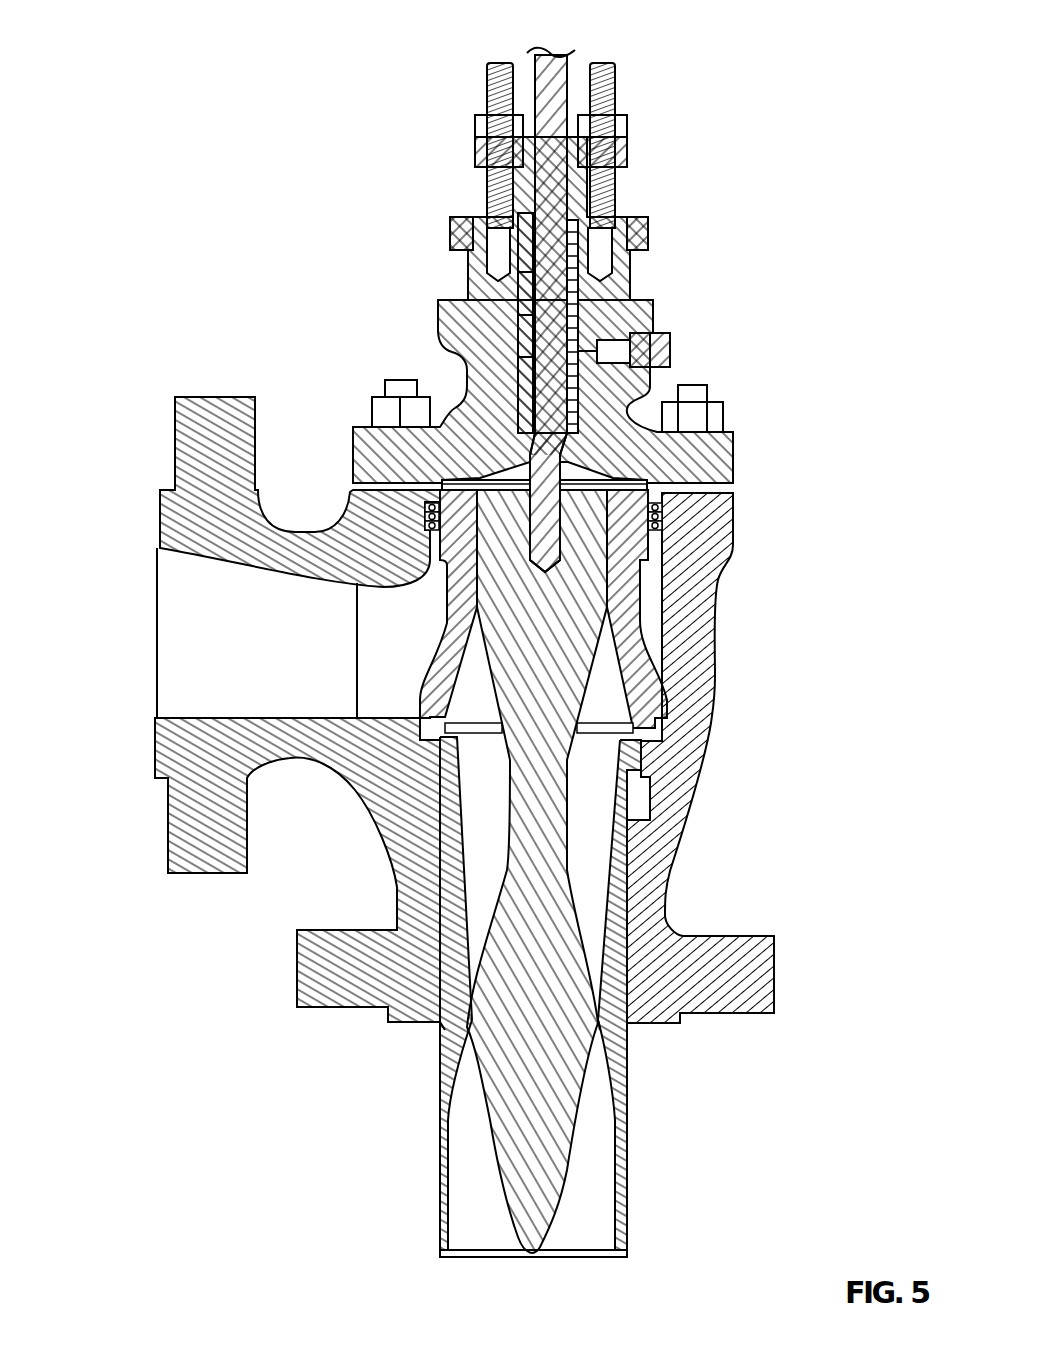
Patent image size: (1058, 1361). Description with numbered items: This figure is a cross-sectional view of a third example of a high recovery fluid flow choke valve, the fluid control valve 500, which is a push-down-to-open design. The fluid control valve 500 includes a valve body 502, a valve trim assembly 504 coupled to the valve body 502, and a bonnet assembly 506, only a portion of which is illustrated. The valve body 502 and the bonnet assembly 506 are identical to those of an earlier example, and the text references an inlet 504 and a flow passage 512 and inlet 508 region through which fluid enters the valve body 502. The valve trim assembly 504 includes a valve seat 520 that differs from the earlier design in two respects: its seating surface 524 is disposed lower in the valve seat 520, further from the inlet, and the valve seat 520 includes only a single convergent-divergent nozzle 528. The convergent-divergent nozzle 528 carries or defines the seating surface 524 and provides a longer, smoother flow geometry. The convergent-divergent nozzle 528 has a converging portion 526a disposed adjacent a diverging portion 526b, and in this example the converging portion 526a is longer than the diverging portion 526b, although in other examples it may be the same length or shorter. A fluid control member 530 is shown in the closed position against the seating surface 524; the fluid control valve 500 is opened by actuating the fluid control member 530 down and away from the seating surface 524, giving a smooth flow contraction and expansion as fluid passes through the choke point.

The fluid control valve 500 is at (228, 46).
The valve body 502 is at (220, 418).
The valve trim assembly 504 is at (670, 600).
The bonnet assembly 506 is at (610, 420).
The inlet 508 is at (128, 693).
The inlet flow passage 512 is at (190, 583).
The valve seat 520 is at (627, 1210).
The seating surface 524 is at (615, 1028).
The converging portion 526a is at (447, 930).
The diverging portion 526b is at (440, 1082).
The convergent-divergent nozzle 528 is at (422, 1040).
The fluid control member 530 is at (560, 895).